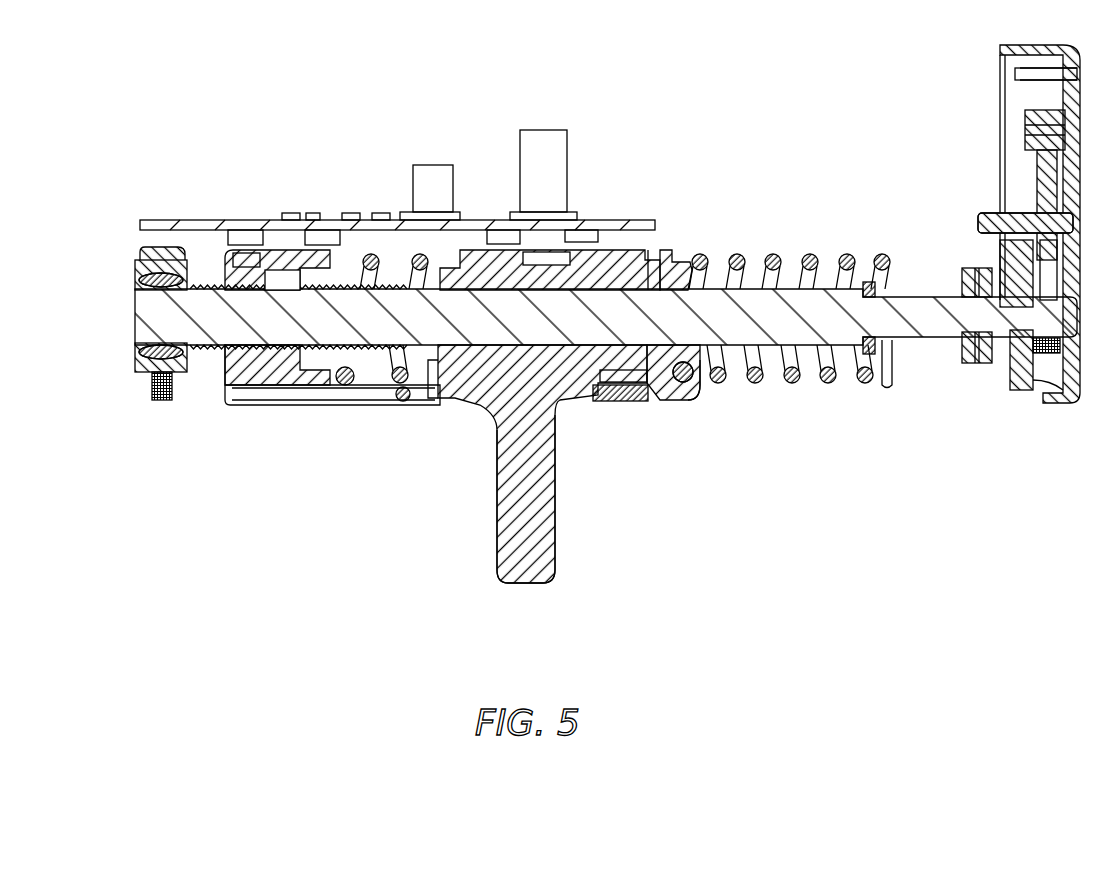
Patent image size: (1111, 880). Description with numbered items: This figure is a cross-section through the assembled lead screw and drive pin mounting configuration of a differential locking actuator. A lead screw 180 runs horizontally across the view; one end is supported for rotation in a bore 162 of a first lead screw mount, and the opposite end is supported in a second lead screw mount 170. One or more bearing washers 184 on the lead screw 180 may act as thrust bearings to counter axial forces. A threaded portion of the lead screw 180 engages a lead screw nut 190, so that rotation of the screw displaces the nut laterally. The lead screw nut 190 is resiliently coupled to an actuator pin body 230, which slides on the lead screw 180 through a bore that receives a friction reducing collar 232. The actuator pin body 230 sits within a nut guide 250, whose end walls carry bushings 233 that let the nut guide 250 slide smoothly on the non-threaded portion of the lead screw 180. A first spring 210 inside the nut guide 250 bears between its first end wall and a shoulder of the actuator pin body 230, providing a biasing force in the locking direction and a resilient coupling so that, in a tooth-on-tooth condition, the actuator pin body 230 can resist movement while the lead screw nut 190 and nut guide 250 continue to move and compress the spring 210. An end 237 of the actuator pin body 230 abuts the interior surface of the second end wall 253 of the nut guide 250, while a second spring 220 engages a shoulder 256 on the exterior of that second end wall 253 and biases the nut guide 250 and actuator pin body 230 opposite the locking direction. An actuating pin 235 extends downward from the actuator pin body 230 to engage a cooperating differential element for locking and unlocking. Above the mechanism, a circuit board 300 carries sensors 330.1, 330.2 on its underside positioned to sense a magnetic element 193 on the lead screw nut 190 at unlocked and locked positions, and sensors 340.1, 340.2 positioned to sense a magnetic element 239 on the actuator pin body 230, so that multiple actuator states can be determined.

The bore 162 is at (918, 340).
The second lead screw mount 170 is at (135, 362).
The lead screw 180 is at (150, 322).
The bearing washer 184 is at (872, 358).
The lead screw nut 190 is at (245, 385).
The magnetic element 193 is at (225, 262).
The spring 210 is at (345, 385).
The spring 220 is at (825, 383).
The actuator pin body 230 is at (652, 258).
The collar 232 is at (465, 352).
The bushing 233 is at (640, 385).
The actuating pin 235 is at (538, 543).
The end 237 is at (680, 260).
The magnetic element 239 is at (545, 257).
The nut guide 250 is at (615, 400).
The second end wall 253 is at (675, 388).
The shoulder 256 is at (682, 400).
The circuit board 300 is at (643, 248).
The sensor 330.1 is at (243, 238).
The sensor 330.2 is at (323, 238).
The sensor 340.1 is at (505, 237).
The sensor 340.2 is at (585, 236).